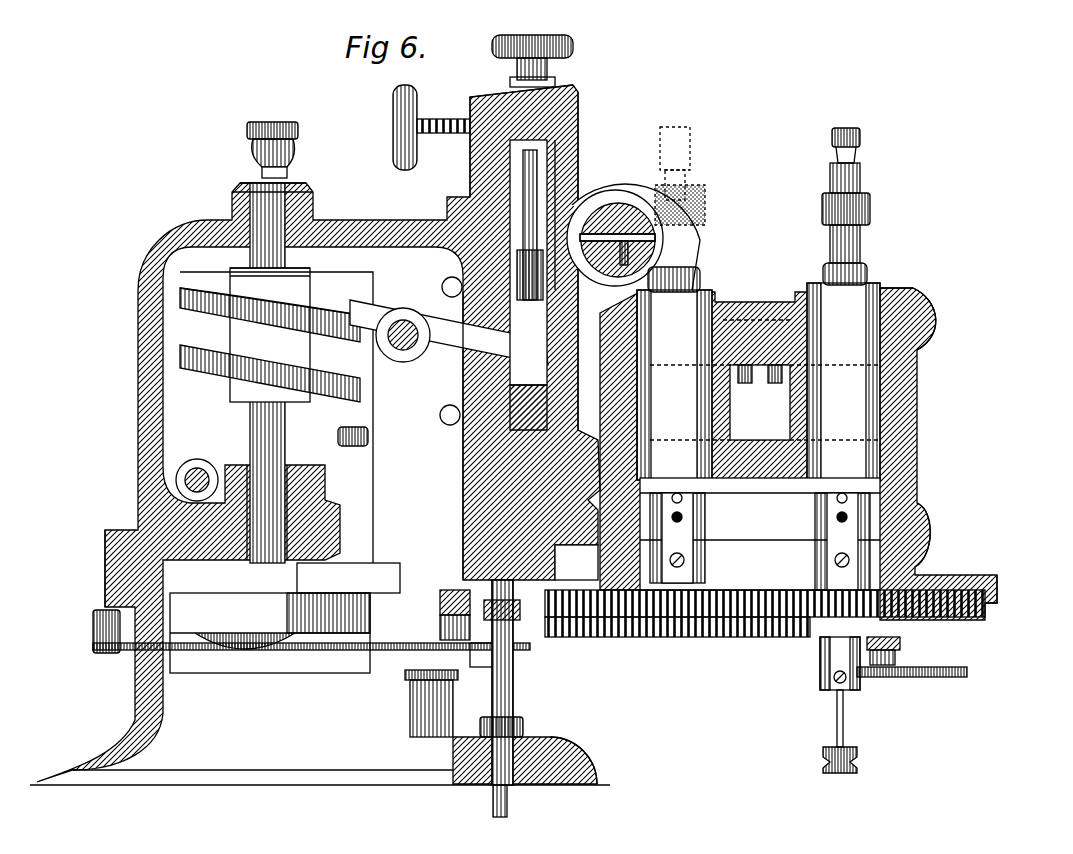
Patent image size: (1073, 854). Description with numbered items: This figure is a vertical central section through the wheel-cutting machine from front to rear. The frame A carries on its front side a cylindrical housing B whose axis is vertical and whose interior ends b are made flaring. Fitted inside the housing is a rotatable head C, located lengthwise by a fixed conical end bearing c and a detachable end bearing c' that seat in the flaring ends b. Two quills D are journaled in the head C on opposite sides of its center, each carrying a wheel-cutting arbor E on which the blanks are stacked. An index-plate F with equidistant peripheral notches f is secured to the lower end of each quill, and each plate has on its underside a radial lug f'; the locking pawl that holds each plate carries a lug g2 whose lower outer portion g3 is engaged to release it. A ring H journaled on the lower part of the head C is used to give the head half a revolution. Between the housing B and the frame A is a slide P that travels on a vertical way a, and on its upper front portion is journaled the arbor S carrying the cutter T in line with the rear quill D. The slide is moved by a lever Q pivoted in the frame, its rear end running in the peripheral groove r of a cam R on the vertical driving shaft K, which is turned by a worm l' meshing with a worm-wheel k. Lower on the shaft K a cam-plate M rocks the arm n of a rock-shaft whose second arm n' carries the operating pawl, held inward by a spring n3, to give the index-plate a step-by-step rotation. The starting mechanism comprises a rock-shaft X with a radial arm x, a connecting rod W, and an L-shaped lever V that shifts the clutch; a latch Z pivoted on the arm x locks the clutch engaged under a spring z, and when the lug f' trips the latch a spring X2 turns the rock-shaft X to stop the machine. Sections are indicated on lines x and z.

The frame A is at (320, 435).
The vertical way a is at (502, 332).
The slide P is at (490, 232).
The arbor S is at (622, 200).
The cutter T is at (656, 240).
The wheel-cutting arbor E is at (764, 195).
The quill D is at (705, 288).
The head C is at (745, 318).
The fixed conical end bearing c is at (820, 534).
The detachable end bearing c' is at (929, 462).
The flaring end b is at (935, 325).
The cylindrical housing B is at (900, 393).
The ring H is at (985, 540).
The gear wheel F' is at (765, 623).
The index-plate F is at (957, 608).
The peripheral notch f is at (793, 702).
The radial lug f' is at (762, 686).
The lug g2 is at (883, 652).
The lower outer portion of lug g3 is at (900, 650).
The spring z is at (998, 606).
The radial arm x is at (410, 470).
The worm l' is at (166, 480).
The shaft K is at (250, 433).
The worm-wheel k is at (325, 478).
The cam R is at (215, 368).
The peripheral groove r is at (270, 329).
The lever Q is at (412, 352).
The arm of rock-shaft n is at (348, 578).
The second arm of rock-shaft n' is at (348, 613).
The spring n3 is at (512, 640).
The cam-plate M is at (240, 635).
The rod W is at (311, 658).
The L-shaped lever V is at (94, 631).
The latch Z is at (440, 703).
The rock-shaft X is at (493, 806).
The spring X2 is at (520, 780).